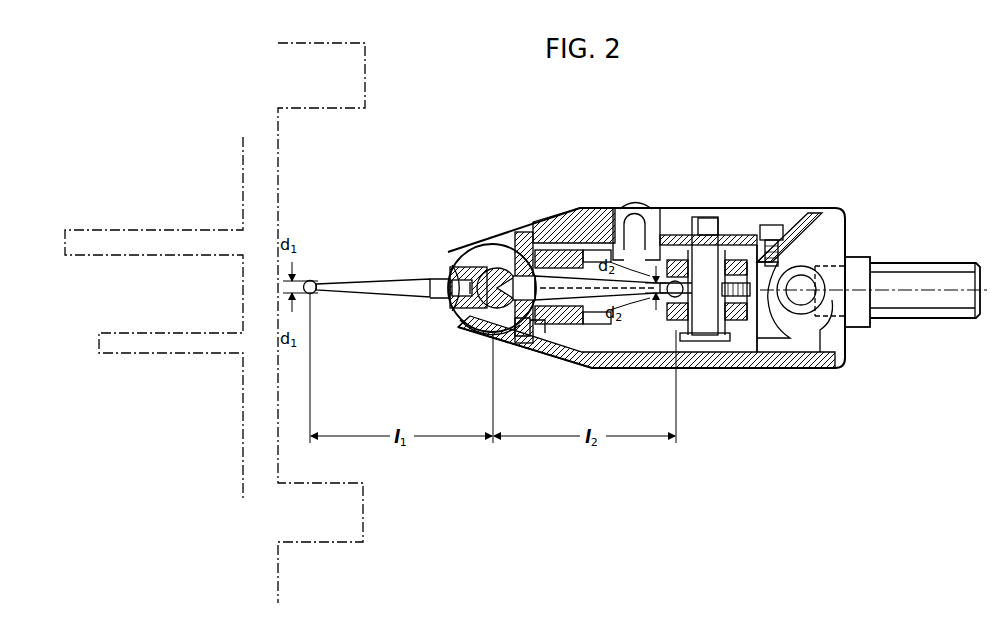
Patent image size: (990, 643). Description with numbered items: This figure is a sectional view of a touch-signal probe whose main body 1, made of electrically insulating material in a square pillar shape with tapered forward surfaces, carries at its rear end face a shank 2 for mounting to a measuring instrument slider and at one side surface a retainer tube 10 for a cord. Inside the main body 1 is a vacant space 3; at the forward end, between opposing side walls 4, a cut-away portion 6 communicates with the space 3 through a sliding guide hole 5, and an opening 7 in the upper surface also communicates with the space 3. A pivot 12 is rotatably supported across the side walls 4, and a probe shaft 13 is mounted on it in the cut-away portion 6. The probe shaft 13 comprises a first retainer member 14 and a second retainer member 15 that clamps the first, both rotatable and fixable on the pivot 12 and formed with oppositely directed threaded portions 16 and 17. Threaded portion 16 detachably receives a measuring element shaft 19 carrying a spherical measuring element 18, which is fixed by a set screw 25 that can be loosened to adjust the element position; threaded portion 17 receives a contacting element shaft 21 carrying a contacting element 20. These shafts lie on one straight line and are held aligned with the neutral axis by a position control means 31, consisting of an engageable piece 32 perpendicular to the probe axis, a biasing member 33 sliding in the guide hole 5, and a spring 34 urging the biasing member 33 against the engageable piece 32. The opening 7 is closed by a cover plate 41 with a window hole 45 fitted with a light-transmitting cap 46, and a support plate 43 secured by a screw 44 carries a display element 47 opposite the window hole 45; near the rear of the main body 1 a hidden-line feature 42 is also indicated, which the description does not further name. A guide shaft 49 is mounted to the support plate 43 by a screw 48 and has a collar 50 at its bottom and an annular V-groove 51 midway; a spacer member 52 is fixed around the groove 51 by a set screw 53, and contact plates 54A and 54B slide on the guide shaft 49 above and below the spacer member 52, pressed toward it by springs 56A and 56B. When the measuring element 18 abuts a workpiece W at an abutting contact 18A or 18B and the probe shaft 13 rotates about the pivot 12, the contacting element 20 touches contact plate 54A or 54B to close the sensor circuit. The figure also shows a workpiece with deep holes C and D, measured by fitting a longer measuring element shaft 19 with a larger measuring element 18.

The main body 1 is at (648, 289).
The shank 2 is at (927, 265).
The vacant space 3 is at (592, 350).
The opposing side walls 4 is at (498, 245).
The sliding guide hole 5 is at (564, 360).
The cut-away portion 6 is at (500, 332).
The opening 7 is at (668, 236).
The retainer tube 10 is at (812, 312).
The pivot 12 is at (487, 268).
The probe shaft 13 is at (433, 276).
The first retainer member 14 is at (455, 302).
The second retainer member 15 is at (522, 233).
The threaded portion 16 is at (487, 306).
The threaded portion 17 is at (521, 336).
The spherical measuring element 18 is at (393, 283).
The abutting contact 18A is at (316, 296).
The abutting contact 18B is at (313, 281).
The measuring element shaft 19 is at (372, 280).
The contacting element 20 is at (706, 276).
The contacting element shaft 21 is at (538, 334).
The set screw 25 is at (470, 305).
The position control means 31 is at (590, 230).
The engageable piece 32 is at (536, 250).
The biasing member 33 is at (560, 250).
The spring 34 is at (592, 250).
The cover plate 41 is at (771, 226).
The hidden bore 42 is at (820, 258).
The support plate 43 is at (735, 248).
The screw 44 is at (798, 232).
The window hole 45 is at (642, 203).
The light-transmitting cap 46 is at (632, 214).
The display element 47 is at (616, 207).
The screw 48 is at (708, 218).
The guide shaft 49 is at (702, 342).
The collar 50 is at (728, 343).
The annular V-groove 51 is at (740, 322).
The spacer member 52 is at (678, 324).
The set screw 53 is at (792, 316).
The upper contact plate 54A is at (677, 260).
The lower contact plate 54B is at (672, 322).
The spring 56A is at (695, 245).
The spring 56B is at (750, 338).
The workpiece W is at (300, 43).
The workpiece surface A is at (328, 483).
The workpiece surface B is at (306, 110).
The deep hole C is at (157, 230).
The deep hole D is at (160, 354).